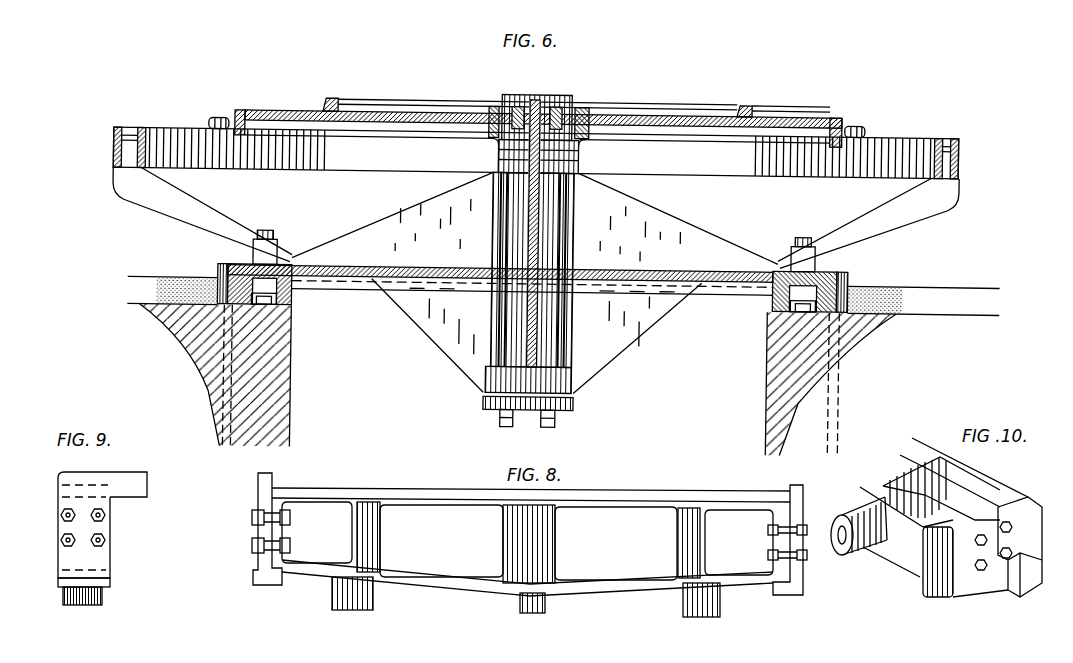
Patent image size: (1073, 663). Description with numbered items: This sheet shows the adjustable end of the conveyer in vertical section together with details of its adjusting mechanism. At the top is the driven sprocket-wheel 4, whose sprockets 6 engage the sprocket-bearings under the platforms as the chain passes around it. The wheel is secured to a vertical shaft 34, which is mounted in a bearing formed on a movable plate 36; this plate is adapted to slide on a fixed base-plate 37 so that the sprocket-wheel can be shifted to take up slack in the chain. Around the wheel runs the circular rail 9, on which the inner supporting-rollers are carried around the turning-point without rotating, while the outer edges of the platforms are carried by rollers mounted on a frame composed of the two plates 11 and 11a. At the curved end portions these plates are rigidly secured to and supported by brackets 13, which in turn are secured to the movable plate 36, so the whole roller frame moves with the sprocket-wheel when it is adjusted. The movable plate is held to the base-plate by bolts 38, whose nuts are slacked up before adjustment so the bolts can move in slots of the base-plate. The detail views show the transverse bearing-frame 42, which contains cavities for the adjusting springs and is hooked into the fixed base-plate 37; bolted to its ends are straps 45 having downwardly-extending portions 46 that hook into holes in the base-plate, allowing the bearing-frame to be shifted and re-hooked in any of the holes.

In FIG. 6, the sprocket-wheel 4 is at (437, 125).
In FIG. 6, the sprockets 6 is at (216, 122).
In FIG. 6, the circular rail 9 is at (330, 101).
In FIG. 6, the plate 11 is at (114, 156).
In FIG. 6, the plate 11a is at (150, 134).
In FIG. 6, the brackets 13 is at (196, 223).
In FIG. 6, the shaft 34 is at (541, 91).
In FIG. 6, the movable plate 36 is at (363, 263).
In FIG. 6, the fixed base-plate 37 is at (278, 283).
In FIG. 6, the bolts 38 is at (262, 300).
In FIG. 8, the transverse bearing-frame 42 is at (617, 585).
In FIG. 10, the transverse bearing-frame 42 is at (897, 555).
In FIG. 9, the straps 45 is at (110, 560).
In FIG. 8, the straps 45 is at (262, 567).
In FIG. 10, the straps 45 is at (969, 580).
In FIG. 9, the downwardly-extending portions 46 is at (148, 490).
In FIG. 10, the downwardly-extending portions 46 is at (1031, 582).